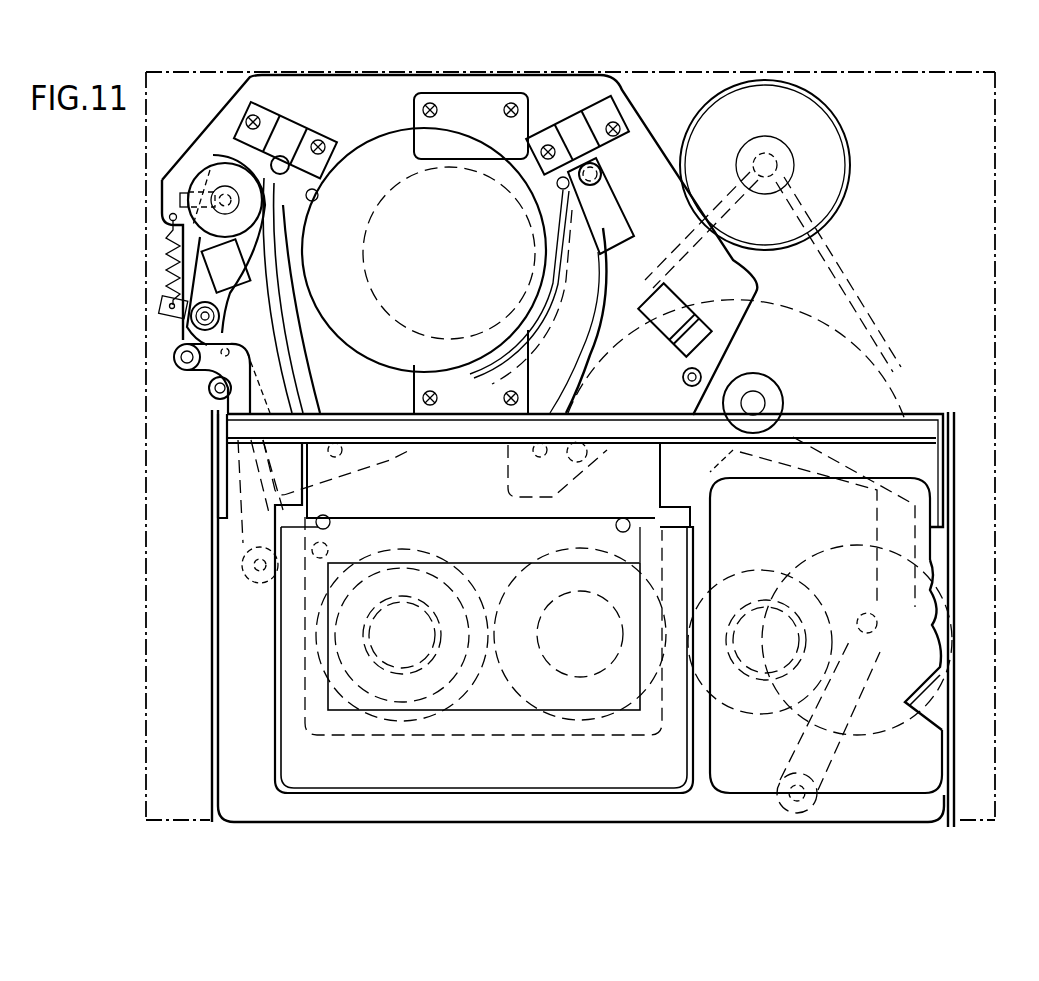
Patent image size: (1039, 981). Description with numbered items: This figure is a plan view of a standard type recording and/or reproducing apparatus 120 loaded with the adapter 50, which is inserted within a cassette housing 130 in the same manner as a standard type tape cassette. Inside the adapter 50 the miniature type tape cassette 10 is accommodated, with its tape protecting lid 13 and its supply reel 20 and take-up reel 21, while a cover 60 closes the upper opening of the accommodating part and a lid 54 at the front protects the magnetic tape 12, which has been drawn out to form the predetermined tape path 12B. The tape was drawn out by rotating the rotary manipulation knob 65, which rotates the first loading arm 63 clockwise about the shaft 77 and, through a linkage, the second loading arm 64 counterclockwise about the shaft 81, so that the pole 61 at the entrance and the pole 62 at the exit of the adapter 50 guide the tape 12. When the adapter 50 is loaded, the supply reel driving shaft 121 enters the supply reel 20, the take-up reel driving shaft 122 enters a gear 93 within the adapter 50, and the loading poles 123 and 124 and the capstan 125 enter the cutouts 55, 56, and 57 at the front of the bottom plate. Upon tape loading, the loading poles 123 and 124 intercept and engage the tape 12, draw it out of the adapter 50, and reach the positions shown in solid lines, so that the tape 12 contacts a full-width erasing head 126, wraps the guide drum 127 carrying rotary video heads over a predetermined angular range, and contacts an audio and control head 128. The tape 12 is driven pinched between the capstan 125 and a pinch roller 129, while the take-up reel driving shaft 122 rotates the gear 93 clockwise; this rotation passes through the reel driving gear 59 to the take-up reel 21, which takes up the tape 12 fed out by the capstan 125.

The standard type recording and/or reproducing apparatus 120 is at (1037, 119).
The guide drum 127 is at (386, 148).
The tape path 12B is at (470, 414).
The loading pole 123 is at (237, 143).
The full-width erasing head 126 is at (205, 273).
The magnetic tape 12 is at (200, 377).
The loading pole 124 is at (603, 187).
The pinch roller 129 is at (751, 378).
The audio and control head 128 is at (678, 296).
The tape protecting lid 13 is at (632, 437).
The cutout 55 is at (361, 457).
The cutout 56 is at (552, 430).
The pole 61 is at (790, 428).
The lid 54 is at (922, 424).
The cassette housing 130 is at (957, 485).
The adapter 50 is at (211, 612).
The pole 62 is at (233, 452).
The second loading arm 64 is at (240, 499).
The cover 60 is at (455, 528).
The supply reel 20 is at (313, 657).
The shaft 81 is at (262, 580).
The miniature type tape cassette 10 is at (450, 735).
The supply reel driving shaft 121 is at (420, 665).
The take-up reel 21 is at (507, 667).
The cutout 57 is at (742, 467).
The rotary manipulation knob 65 is at (948, 636).
The first loading arm 63 is at (850, 498).
The reel driving gear 59 is at (713, 570).
The gear 93 is at (765, 570).
The take-up reel driving shaft 122 is at (766, 657).
The shaft 77 is at (806, 800).
The capstan 125 is at (617, 510).